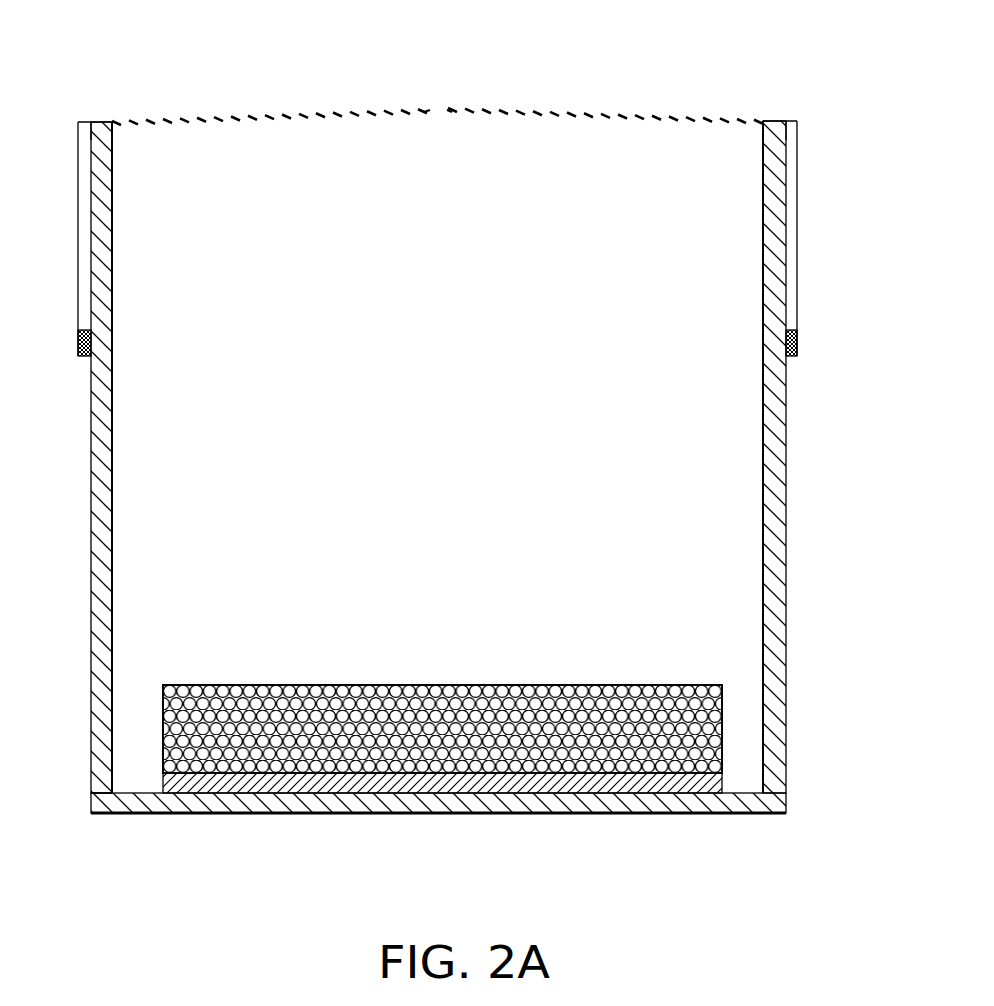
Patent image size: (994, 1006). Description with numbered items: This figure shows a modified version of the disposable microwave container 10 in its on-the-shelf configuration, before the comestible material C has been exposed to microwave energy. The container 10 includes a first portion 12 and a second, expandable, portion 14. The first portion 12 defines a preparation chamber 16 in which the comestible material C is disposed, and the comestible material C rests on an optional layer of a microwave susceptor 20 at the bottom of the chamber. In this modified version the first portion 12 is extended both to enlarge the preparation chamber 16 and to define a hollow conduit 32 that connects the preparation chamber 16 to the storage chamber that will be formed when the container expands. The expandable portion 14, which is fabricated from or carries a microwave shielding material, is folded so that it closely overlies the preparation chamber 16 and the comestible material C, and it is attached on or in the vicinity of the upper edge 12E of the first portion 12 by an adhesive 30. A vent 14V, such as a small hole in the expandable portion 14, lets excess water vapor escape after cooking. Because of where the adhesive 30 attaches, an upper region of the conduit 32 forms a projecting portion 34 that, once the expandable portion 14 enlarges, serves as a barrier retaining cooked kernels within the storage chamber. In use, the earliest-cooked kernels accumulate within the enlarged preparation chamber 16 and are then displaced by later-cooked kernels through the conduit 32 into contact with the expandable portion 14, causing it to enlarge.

The container 10 is at (196, 60).
The first portion 12 is at (77, 398).
The upper edge 12E is at (102, 120).
The expandable portion 14 is at (341, 109).
The vent 14V is at (441, 98).
The preparation chamber 16 is at (735, 735).
The microwave susceptor 20 is at (452, 778).
The adhesive 30 is at (789, 358).
The hollow conduit 32 is at (644, 480).
The projecting portion 34 is at (806, 137).
The comestible material C is at (163, 748).